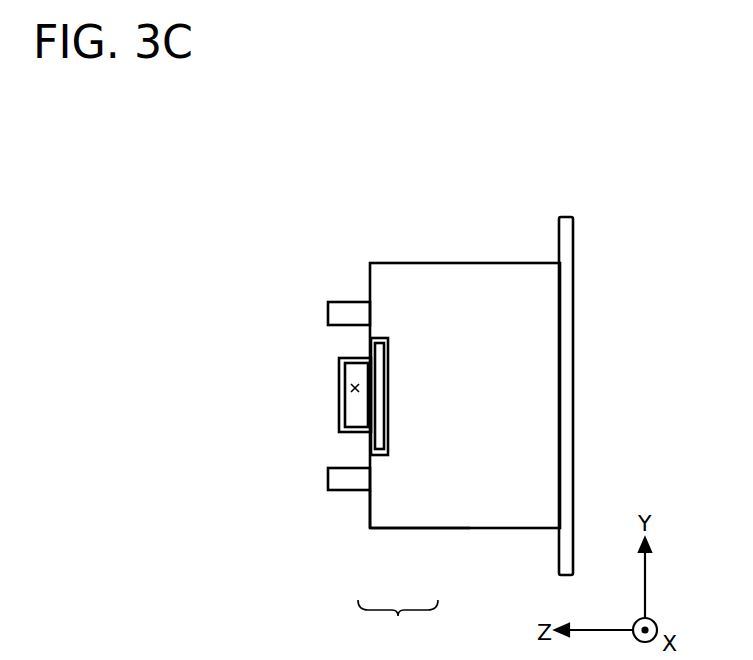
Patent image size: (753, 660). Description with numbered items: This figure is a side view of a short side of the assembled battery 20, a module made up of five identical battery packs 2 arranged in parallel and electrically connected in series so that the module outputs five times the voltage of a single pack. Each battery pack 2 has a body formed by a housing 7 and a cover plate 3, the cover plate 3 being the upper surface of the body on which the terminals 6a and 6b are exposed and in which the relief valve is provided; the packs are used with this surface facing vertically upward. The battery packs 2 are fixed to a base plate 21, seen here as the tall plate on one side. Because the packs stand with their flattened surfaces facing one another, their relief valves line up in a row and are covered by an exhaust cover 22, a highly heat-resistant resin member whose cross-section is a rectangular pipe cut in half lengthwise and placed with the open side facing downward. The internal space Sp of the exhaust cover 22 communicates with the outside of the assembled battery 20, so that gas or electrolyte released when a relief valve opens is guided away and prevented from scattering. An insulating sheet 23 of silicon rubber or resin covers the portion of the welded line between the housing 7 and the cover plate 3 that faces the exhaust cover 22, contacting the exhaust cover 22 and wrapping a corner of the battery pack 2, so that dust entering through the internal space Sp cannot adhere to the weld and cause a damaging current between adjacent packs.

The battery pack 2 is at (398, 625).
The cover plate 3 is at (370, 510).
The housing 7 is at (420, 505).
The assembled battery 20 is at (382, 251).
The base plate 21 is at (566, 232).
The exhaust cover 22 is at (373, 357).
The insulating sheet 23 is at (367, 446).
The internal space Sp is at (340, 389).
The terminal 6a is at (328, 313).
The terminal 6b is at (328, 478).